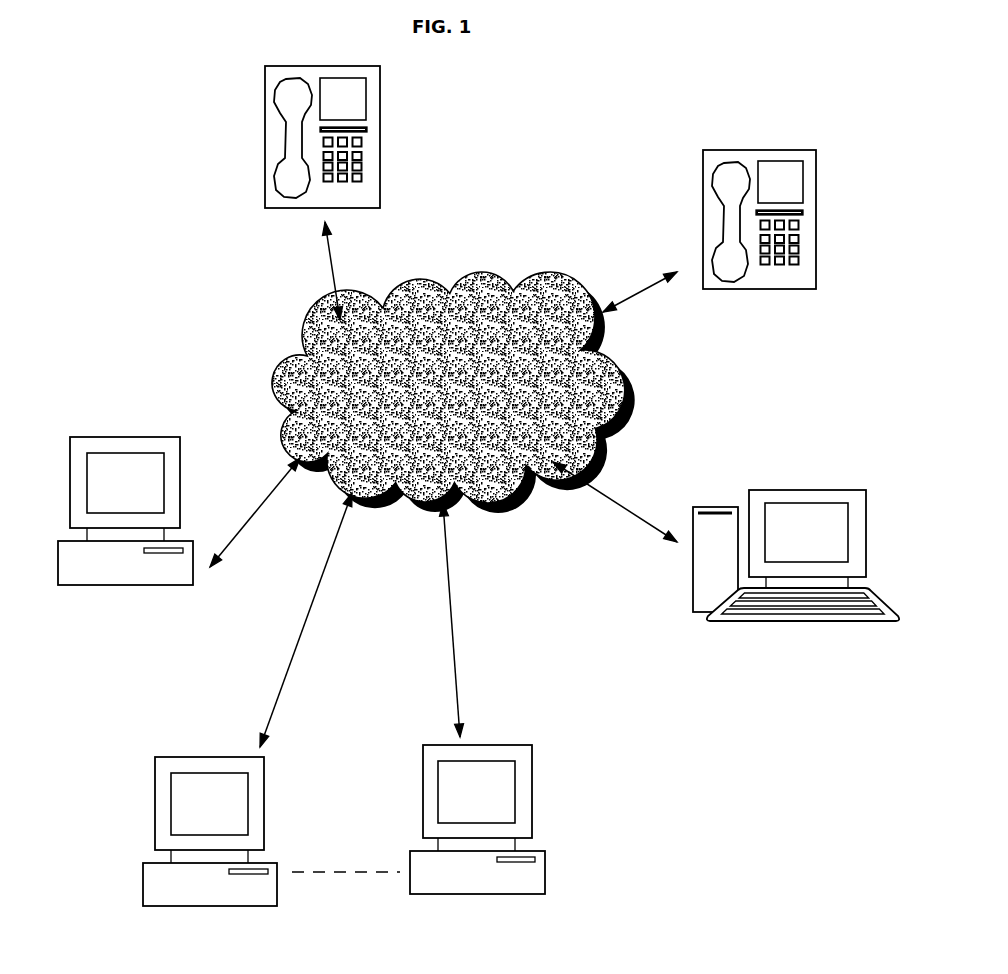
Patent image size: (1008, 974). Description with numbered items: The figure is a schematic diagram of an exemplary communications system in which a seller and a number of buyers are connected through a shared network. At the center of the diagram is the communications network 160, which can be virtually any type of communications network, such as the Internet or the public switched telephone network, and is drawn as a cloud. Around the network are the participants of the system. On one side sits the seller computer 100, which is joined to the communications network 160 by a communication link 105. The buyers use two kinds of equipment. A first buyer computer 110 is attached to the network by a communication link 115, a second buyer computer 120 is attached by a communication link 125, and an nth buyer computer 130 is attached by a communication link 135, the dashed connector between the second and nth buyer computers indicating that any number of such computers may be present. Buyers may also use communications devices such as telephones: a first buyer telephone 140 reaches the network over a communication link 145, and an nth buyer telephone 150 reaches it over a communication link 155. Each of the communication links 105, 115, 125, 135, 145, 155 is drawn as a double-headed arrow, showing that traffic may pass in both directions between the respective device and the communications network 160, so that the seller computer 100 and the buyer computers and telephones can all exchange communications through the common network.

The seller computer 100 is at (796, 579).
The communication link 105 is at (615, 502).
The buyer computer 110 is at (135, 537).
The communication link 115 is at (254, 512).
The buyer computer 120 is at (203, 857).
The communication link 125 is at (306, 620).
The buyer computer 130 is at (488, 851).
The communication link 135 is at (482, 620).
The buyer communications device 140 is at (432, 137).
The communication link 145 is at (363, 271).
The buyer communications device 150 is at (757, 264).
The communication link 155 is at (640, 281).
The communications network 160 is at (453, 392).